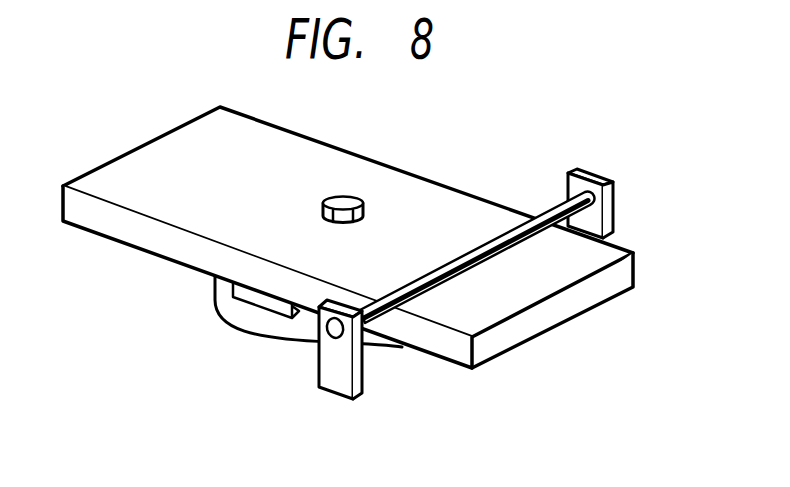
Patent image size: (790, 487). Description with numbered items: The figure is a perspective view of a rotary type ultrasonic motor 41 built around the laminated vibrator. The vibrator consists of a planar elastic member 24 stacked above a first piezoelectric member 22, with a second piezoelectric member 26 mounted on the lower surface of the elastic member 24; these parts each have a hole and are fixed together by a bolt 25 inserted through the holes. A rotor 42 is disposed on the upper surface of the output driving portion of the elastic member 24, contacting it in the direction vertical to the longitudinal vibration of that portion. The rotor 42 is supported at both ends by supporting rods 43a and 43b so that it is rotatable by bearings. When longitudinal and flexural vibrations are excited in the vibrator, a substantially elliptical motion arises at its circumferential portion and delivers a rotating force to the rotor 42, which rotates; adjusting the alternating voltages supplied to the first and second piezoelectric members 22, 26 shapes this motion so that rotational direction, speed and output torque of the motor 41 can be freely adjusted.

The first piezoelectric member 22 is at (237, 315).
The planar elastic member 24 is at (293, 145).
The bolt 25 is at (347, 199).
The second piezoelectric member 26 is at (267, 302).
The rotary type ultrasonic motor 41 is at (162, 268).
The rotor 42 is at (547, 202).
The supporting rod 43a is at (326, 372).
The supporting rod 43b is at (612, 200).